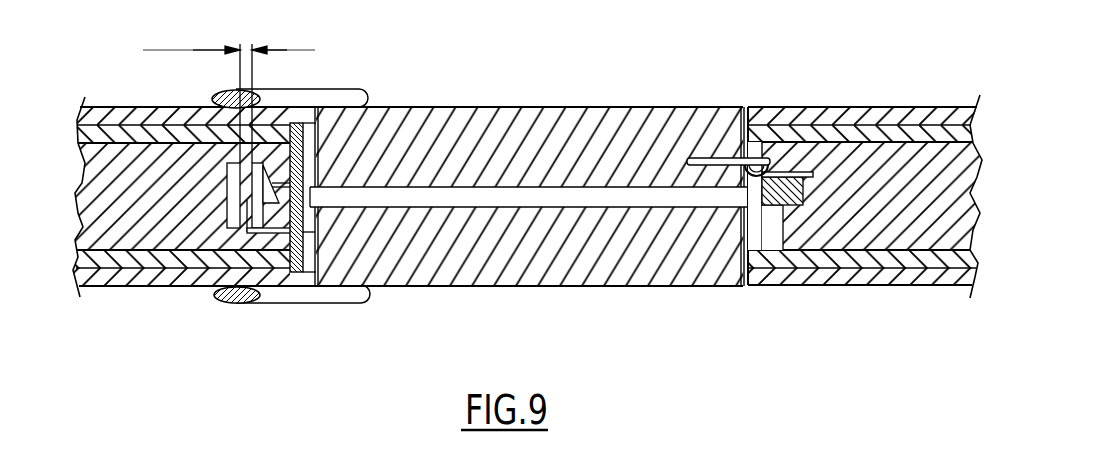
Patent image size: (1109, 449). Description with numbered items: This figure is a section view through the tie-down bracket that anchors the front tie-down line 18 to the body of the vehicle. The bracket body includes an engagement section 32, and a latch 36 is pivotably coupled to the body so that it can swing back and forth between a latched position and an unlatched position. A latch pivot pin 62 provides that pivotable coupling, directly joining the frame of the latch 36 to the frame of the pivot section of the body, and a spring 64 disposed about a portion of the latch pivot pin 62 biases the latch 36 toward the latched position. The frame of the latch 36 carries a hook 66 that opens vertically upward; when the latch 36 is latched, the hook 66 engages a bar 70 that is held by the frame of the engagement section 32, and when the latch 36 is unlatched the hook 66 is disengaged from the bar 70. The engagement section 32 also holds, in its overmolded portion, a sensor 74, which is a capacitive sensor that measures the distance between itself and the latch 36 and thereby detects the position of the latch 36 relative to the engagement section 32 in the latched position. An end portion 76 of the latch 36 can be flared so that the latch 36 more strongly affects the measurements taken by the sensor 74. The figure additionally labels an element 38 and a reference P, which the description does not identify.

The front tie-down line 18 is at (292, 297).
The engagement section 32 is at (160, 286).
The latch 36 is at (455, 268).
The second panel 38 is at (810, 286).
The latch pivot pin 62 is at (767, 220).
The spring 64 is at (794, 173).
The hook 66 is at (536, 210).
The bar 70 is at (313, 222).
The sensor 74 is at (235, 211).
The end portion 76 is at (283, 125).
The pitch dimension P is at (285, 49).